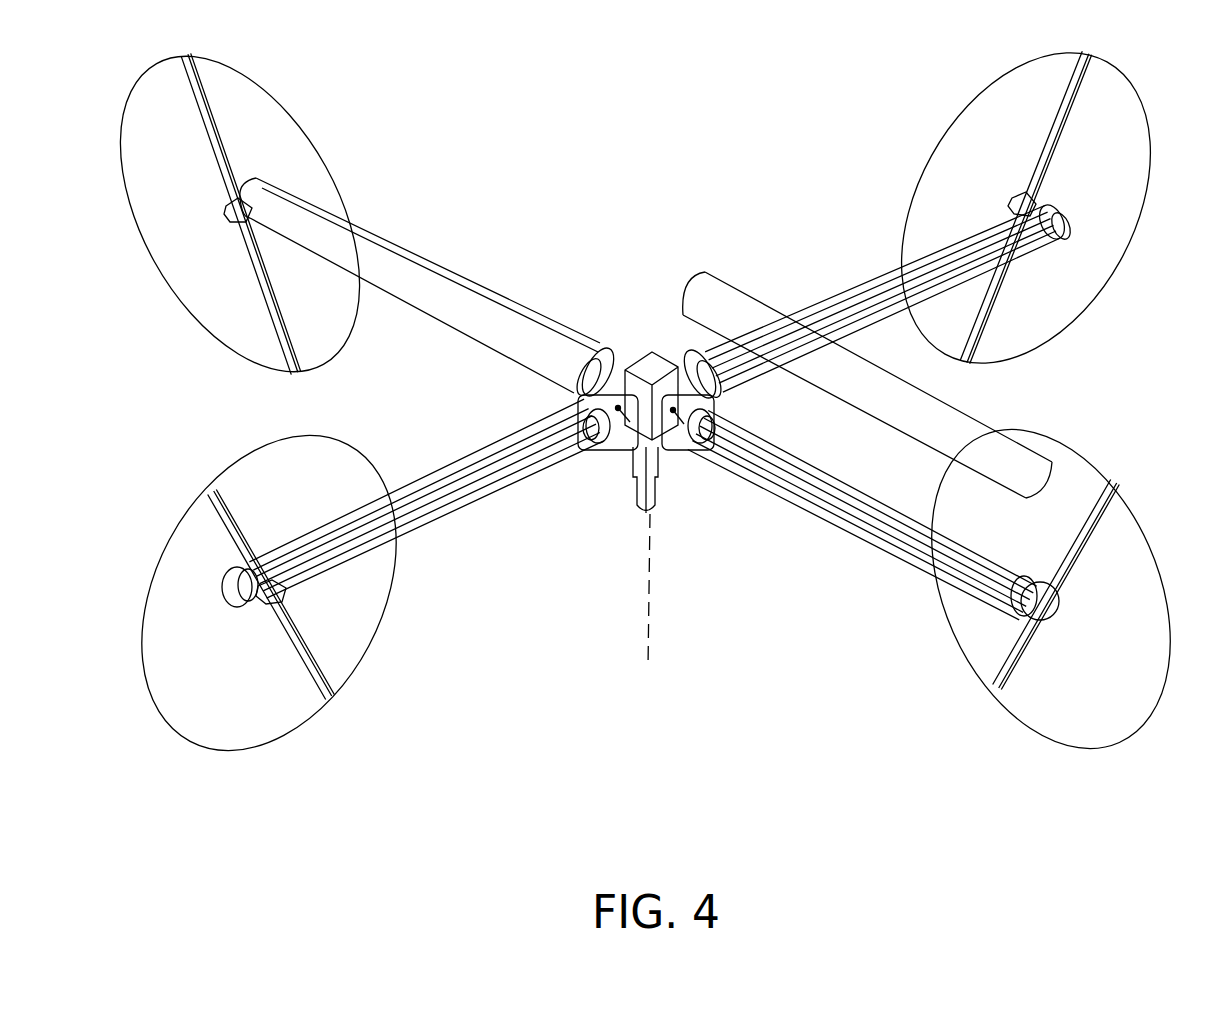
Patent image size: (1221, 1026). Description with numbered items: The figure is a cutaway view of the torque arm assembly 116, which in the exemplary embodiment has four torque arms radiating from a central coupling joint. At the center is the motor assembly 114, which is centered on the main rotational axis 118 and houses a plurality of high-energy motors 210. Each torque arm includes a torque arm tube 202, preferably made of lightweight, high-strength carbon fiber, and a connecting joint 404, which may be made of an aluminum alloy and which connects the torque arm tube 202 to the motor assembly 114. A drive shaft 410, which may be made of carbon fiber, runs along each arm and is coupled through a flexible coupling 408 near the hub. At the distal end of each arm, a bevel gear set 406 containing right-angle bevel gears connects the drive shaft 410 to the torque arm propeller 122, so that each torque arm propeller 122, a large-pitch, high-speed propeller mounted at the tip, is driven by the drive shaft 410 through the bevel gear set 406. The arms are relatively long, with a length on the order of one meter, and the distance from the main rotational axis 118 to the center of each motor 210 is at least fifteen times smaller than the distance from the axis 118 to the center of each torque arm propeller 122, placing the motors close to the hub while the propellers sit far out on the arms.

The motor assembly 114 is at (665, 341).
The torque arm assembly 116 is at (500, 243).
The main rotational axis 118 is at (647, 553).
The torque arm propeller 122 is at (1049, 297).
The torque arm tube 202 is at (375, 247).
The high-energy motor 210 is at (686, 453).
The connecting joint 404 is at (610, 343).
The bevel gear set 406 is at (1023, 195).
The flexible coupling 408 is at (570, 450).
The drive shaft 410 is at (967, 570).